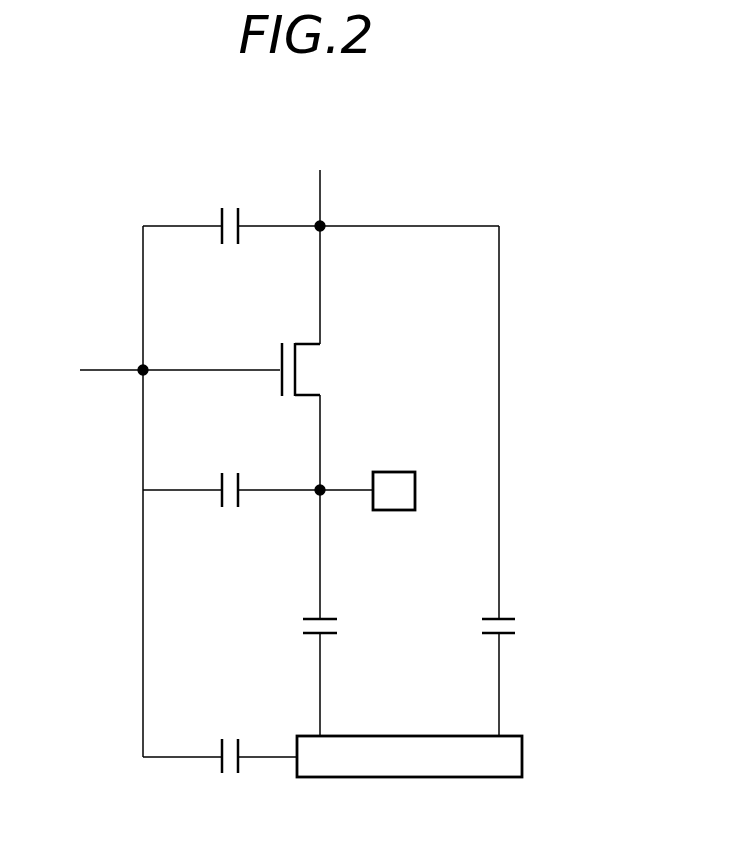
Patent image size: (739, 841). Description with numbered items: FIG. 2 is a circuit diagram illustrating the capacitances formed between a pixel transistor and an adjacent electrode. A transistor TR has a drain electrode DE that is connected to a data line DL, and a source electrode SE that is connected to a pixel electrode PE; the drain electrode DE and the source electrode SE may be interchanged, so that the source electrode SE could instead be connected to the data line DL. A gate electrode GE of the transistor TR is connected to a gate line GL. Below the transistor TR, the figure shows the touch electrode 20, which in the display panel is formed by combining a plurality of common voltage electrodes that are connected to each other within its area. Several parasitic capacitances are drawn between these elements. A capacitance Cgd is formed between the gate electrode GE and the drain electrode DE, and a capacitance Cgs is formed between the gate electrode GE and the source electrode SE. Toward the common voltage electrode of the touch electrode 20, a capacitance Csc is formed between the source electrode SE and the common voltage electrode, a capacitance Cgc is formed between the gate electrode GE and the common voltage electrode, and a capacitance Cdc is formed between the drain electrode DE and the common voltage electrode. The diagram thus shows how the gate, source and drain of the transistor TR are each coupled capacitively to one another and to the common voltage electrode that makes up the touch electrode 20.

The data line DL is at (321, 185).
The drain electrode DE is at (334, 270).
The gate line GL is at (93, 371).
The gate electrode GE is at (209, 358).
The transistor TR is at (318, 416).
The source electrode SE is at (344, 477).
The pixel electrode PE is at (409, 491).
The capacitance between gate electrode and drain electrode Cgd is at (231, 211).
The capacitance between gate electrode and source electrode Cgs is at (231, 478).
The capacitance between source electrode and common voltage electrode Csc is at (298, 613).
The capacitance between drain electrode and common voltage electrode Cdc is at (474, 625).
The capacitance between gate electrode and common voltage electrode Cgc is at (220, 743).
The touch electrode 20 is at (512, 763).